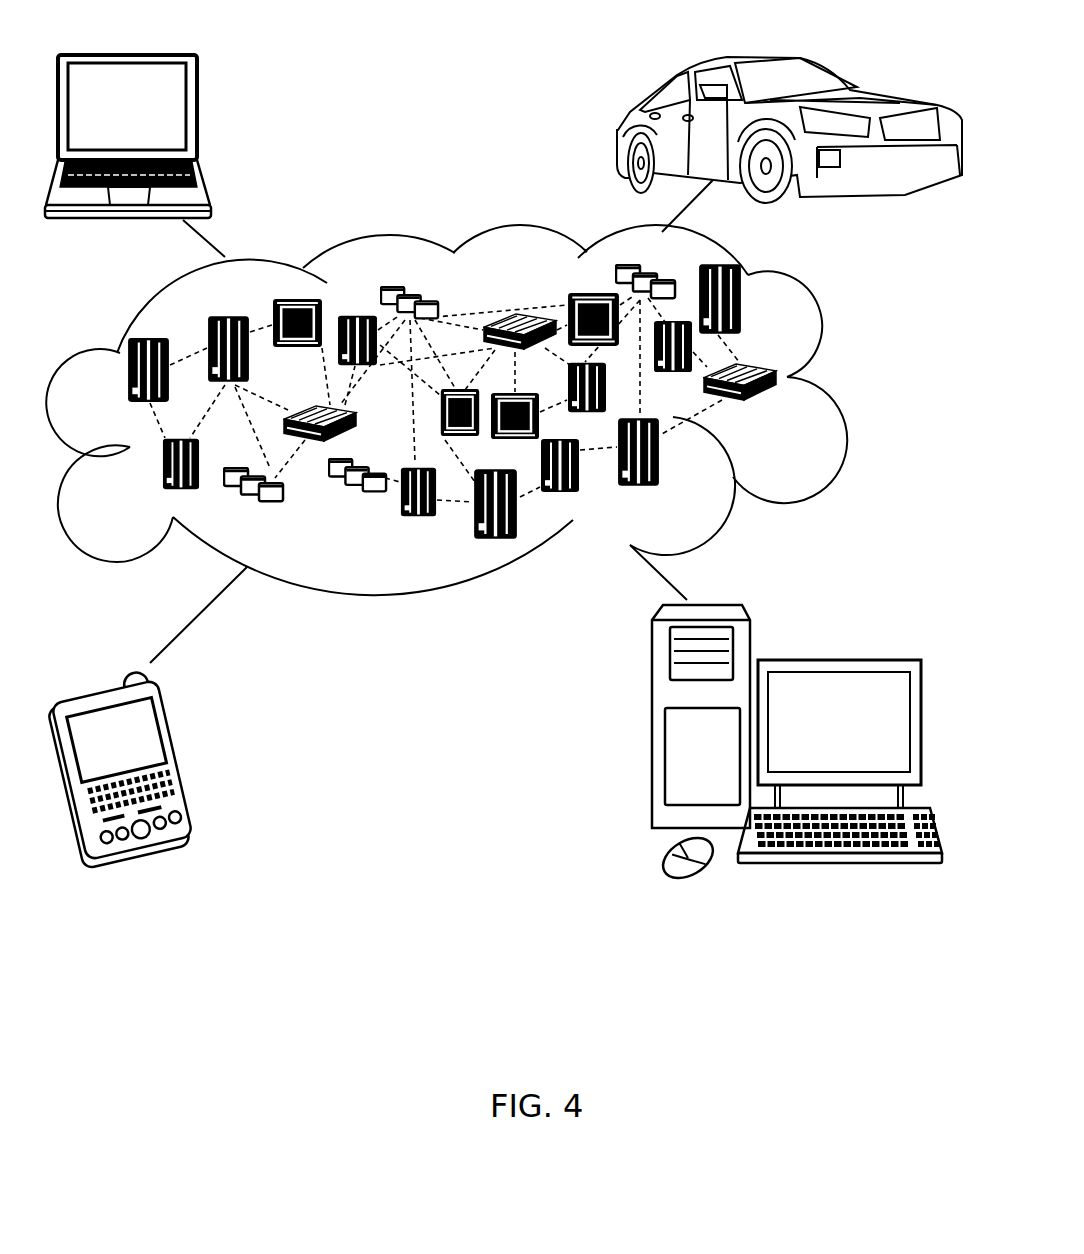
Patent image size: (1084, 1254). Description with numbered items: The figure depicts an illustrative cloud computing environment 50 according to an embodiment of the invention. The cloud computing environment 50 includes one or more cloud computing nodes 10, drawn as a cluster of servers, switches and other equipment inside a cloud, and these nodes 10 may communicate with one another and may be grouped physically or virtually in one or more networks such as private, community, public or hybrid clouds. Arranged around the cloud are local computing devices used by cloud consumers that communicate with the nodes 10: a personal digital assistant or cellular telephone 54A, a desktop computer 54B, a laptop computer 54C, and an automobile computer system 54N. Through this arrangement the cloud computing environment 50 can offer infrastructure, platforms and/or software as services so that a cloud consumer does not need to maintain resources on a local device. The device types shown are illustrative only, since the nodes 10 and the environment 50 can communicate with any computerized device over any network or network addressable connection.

The cloud computing environment 50 is at (837, 373).
The cloud computing node 10 is at (777, 408).
The personal digital assistant or cellular telephone 54A is at (183, 753).
The desktop computer 54B is at (837, 660).
The laptop computer 54C is at (197, 115).
The automobile computer system 54N is at (622, 131).